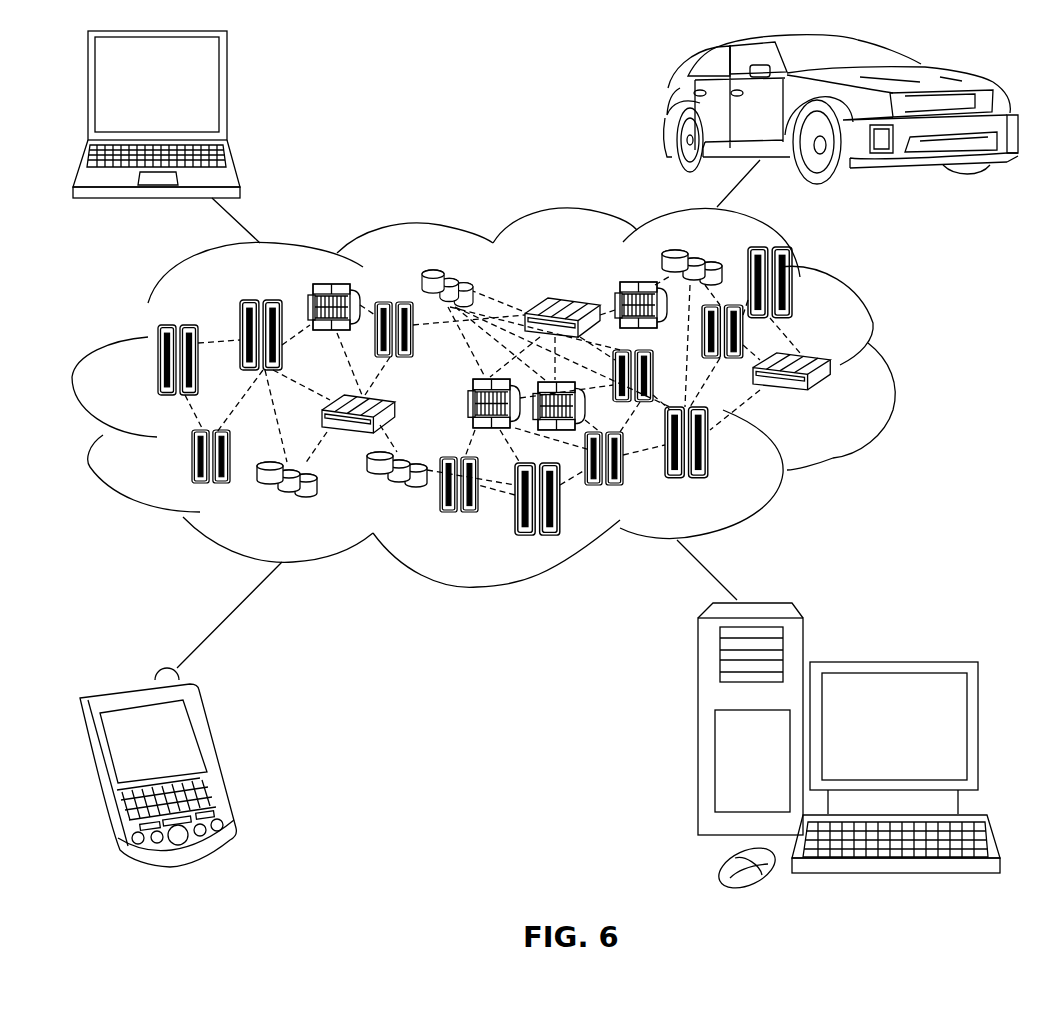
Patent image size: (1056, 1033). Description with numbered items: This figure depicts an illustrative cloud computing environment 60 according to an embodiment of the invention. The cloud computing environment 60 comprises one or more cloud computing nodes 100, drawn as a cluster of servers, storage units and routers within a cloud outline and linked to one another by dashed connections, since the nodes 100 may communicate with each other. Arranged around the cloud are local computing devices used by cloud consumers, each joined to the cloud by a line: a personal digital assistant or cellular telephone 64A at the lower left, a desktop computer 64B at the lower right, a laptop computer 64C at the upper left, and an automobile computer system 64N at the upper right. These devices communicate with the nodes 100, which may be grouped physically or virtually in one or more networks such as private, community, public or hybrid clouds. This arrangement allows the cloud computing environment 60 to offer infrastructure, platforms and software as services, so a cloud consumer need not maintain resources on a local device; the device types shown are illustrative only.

The personal digital assistant (PDA) or cellular telephone 64A is at (217, 754).
The desktop computer 64B is at (890, 662).
The laptop computer 64C is at (230, 92).
The automobile computer system 64N is at (670, 108).
The cloud computing environment 60 is at (892, 368).
The cloud computing nodes 100 is at (833, 398).